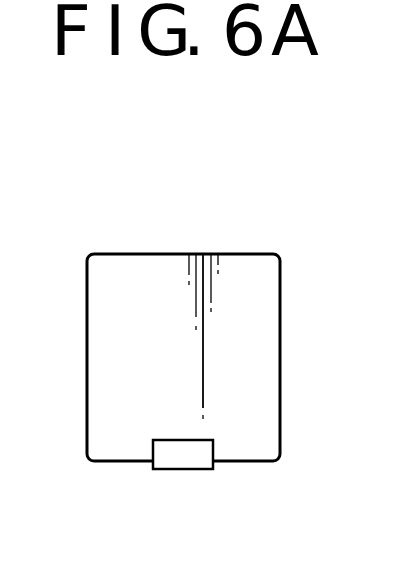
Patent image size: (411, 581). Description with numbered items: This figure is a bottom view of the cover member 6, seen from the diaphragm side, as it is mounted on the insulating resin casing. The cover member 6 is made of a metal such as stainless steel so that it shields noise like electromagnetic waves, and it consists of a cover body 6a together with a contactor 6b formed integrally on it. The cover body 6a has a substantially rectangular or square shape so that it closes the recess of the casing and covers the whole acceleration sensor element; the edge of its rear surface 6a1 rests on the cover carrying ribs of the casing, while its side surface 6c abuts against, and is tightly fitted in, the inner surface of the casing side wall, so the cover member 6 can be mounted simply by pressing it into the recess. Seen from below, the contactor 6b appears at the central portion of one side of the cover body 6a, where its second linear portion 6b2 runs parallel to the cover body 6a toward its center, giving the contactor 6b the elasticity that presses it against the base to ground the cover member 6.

The cover member 6 is at (207, 368).
The cover body 6a is at (207, 358).
The rear surface 6a1 is at (247, 392).
The contactor 6b is at (169, 490).
The second linear portion 6b2 is at (145, 482).
The side surface 6c is at (153, 254).